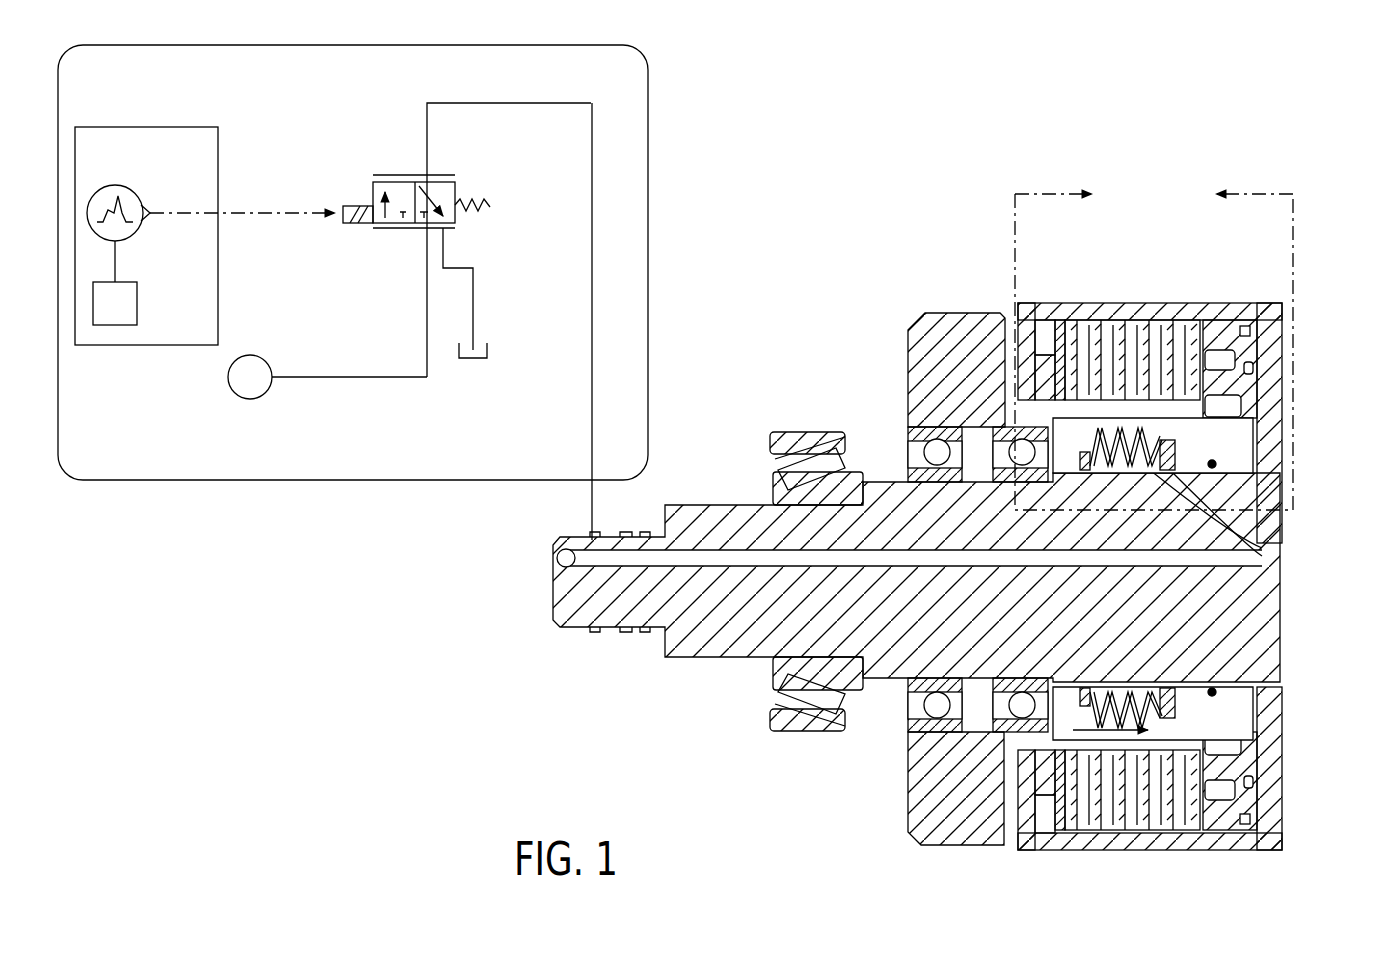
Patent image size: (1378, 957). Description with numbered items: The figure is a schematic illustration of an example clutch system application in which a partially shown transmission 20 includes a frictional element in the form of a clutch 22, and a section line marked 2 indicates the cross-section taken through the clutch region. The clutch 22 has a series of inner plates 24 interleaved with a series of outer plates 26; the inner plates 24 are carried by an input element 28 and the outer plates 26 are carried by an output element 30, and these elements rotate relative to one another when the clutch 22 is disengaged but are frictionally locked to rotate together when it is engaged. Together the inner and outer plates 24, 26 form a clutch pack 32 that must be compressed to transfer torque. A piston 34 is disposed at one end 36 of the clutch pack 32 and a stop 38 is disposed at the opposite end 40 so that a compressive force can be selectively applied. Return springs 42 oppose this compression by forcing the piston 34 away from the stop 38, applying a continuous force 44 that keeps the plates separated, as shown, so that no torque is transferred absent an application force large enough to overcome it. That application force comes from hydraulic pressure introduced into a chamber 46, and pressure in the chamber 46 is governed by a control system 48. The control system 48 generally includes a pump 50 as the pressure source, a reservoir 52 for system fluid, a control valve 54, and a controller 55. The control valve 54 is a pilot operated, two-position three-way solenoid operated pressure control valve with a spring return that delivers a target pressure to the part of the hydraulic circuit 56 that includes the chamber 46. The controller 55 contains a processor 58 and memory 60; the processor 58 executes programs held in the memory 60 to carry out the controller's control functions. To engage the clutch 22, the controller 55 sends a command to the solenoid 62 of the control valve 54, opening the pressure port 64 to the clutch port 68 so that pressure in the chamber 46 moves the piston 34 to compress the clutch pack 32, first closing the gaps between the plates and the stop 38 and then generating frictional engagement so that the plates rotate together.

The section line 2- 2 is at (1154, 345).
The transmission 20 is at (1200, 305).
The clutch 22 is at (1112, 316).
The inner plates 24 is at (1245, 435).
The outer plates 26 is at (1093, 324).
The input element 28 is at (930, 398).
The output element 30 is at (1163, 318).
The clutch pack 32 is at (1148, 834).
The piston 34 is at (1262, 345).
The end of clutch pack 36 is at (1210, 320).
The stop 38 is at (1025, 370).
The opposite end of clutch pack 40 is at (1055, 325).
The return springs 42 is at (1262, 564).
The continuous force 44 is at (1078, 725).
The chamber 46 is at (1262, 380).
The control system 48 is at (388, 45).
The pump 50 is at (254, 400).
The reservoir 52 is at (483, 350).
The control valve 54 is at (440, 182).
The controller 55 is at (130, 127).
The hydraulic circuit 56 is at (597, 286).
The processor 58 is at (118, 185).
The memory 60 is at (137, 300).
The solenoid 62 is at (350, 223).
The pressure port 64 is at (425, 240).
The clutch port 68 is at (430, 175).